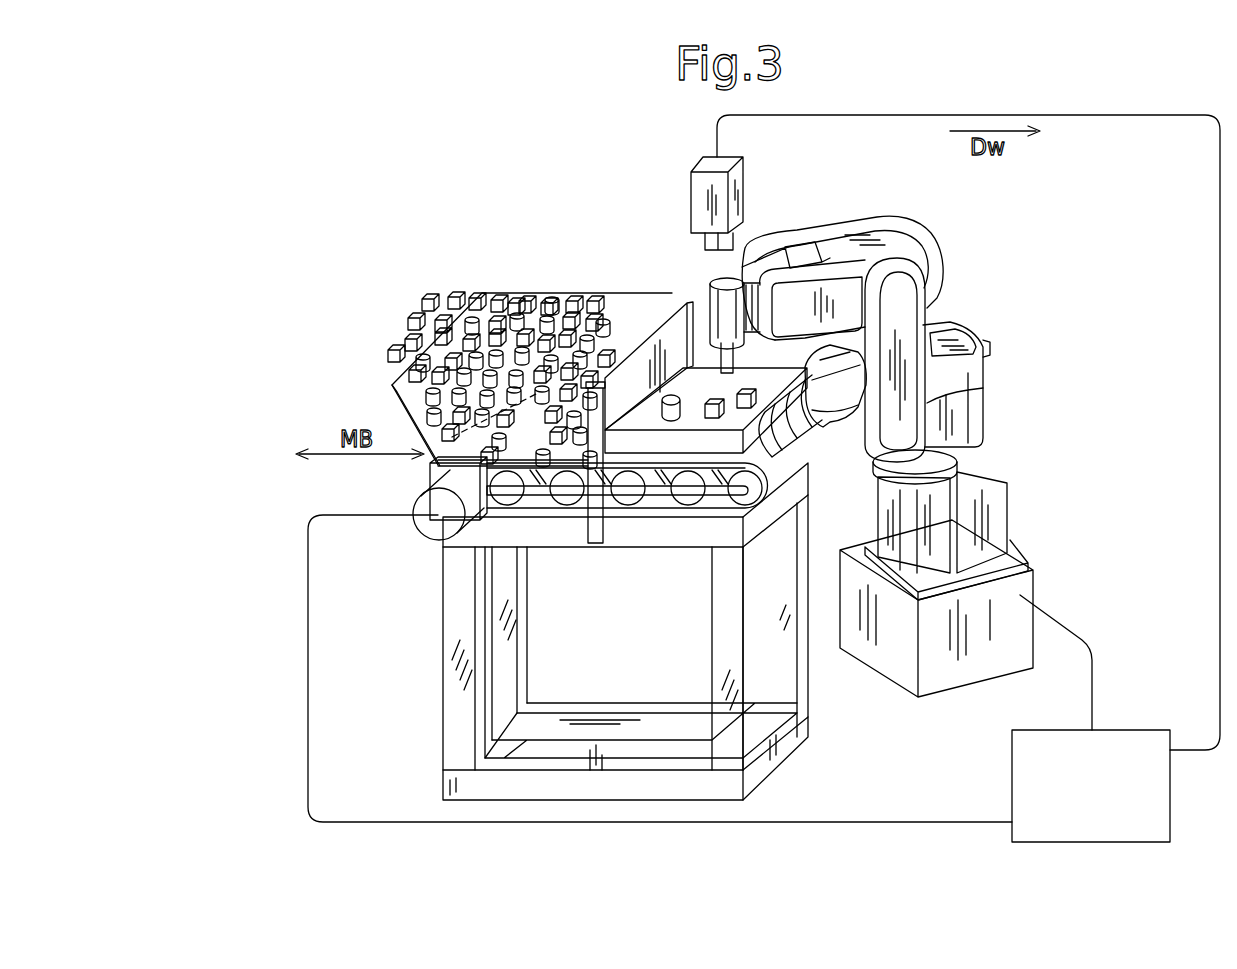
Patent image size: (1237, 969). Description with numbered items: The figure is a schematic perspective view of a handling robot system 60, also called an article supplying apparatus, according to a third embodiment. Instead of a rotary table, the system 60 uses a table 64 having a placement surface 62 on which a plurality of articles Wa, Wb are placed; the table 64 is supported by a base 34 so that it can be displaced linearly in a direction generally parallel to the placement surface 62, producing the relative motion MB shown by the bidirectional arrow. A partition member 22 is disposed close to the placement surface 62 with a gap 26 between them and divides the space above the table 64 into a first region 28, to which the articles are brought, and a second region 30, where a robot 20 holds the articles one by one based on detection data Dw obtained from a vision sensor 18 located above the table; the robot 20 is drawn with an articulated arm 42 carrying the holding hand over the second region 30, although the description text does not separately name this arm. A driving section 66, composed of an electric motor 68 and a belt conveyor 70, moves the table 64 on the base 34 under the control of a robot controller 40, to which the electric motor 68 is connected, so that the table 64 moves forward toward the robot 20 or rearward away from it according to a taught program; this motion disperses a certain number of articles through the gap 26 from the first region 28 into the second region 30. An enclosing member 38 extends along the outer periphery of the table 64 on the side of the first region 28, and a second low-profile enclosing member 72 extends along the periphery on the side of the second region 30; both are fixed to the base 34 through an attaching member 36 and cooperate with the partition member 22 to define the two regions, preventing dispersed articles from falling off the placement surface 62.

The vision sensor 18 is at (697, 197).
The robot 20 is at (920, 434).
The partition member 22 is at (648, 416).
The gap 26 is at (602, 320).
The first region 28 is at (470, 328).
The second region 30 is at (695, 370).
The base 34 is at (455, 637).
The attaching member 36 is at (594, 525).
The enclosing member 38 is at (395, 365).
The robot controller 40 is at (1122, 729).
The robot arm 42 is at (762, 348).
The handling robot system 60 is at (283, 700).
The placement surface 62 is at (690, 425).
The table 64 is at (793, 467).
The driving section 66 is at (247, 485).
The electric motor 68 is at (420, 500).
The belt conveyor 70 is at (475, 557).
The second low-profile enclosing member 72 is at (768, 420).